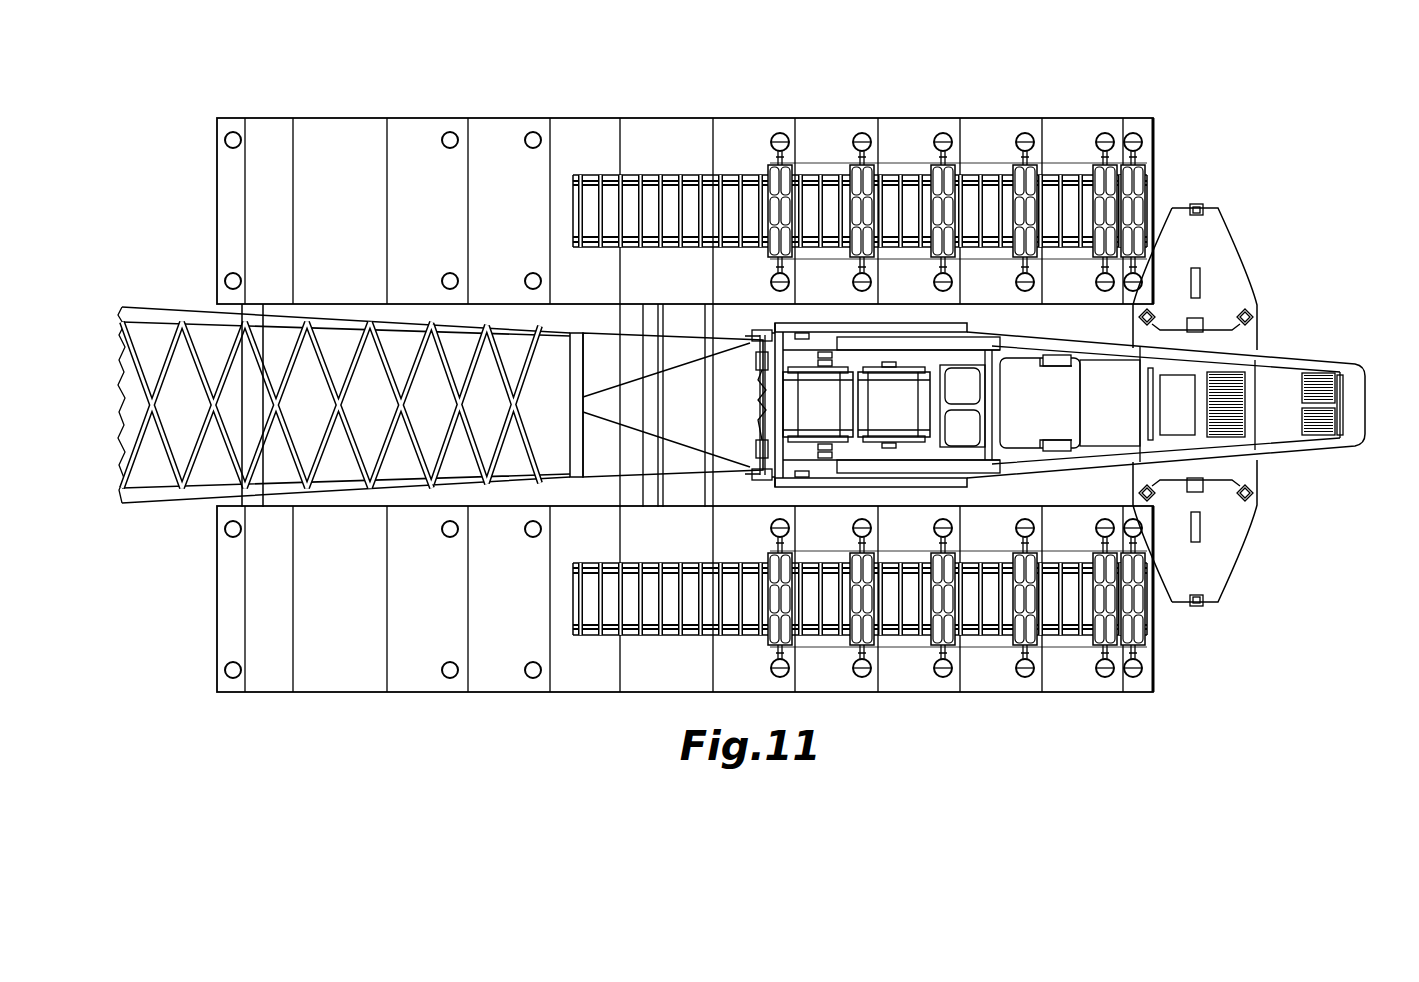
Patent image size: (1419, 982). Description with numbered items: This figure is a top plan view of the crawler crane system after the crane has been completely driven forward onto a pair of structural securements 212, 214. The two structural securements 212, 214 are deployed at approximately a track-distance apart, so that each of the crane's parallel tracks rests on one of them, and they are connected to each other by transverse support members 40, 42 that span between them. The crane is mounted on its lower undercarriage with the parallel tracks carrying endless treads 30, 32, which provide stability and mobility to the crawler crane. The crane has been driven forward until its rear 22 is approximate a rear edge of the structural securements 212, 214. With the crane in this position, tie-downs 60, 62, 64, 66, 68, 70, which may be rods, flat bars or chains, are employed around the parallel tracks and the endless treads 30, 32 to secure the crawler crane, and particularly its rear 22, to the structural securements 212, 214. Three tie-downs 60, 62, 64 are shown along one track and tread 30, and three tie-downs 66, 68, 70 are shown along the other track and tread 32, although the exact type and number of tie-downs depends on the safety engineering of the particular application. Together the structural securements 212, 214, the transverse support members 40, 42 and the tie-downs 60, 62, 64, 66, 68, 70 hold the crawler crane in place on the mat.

The rear 22 is at (1365, 398).
The endless tread 30 is at (905, 617).
The endless tread 32 is at (905, 192).
The transverse support member 40 is at (245, 370).
The transverse support member 42 is at (622, 318).
The tie-down 60 is at (1017, 660).
The tie-down 62 is at (1100, 660).
The tie-down 64 is at (1145, 660).
The tie-down 66 is at (1018, 144).
The tie-down 68 is at (1102, 148).
The tie-down 70 is at (1142, 148).
The structural securement 212 is at (333, 693).
The structural securement 214 is at (333, 117).